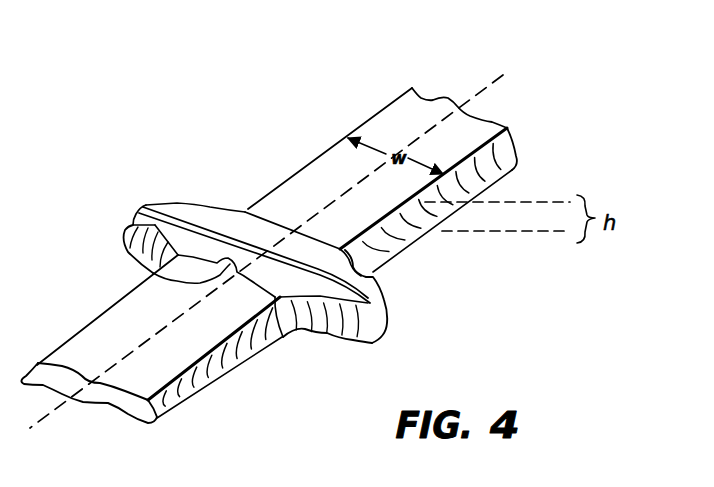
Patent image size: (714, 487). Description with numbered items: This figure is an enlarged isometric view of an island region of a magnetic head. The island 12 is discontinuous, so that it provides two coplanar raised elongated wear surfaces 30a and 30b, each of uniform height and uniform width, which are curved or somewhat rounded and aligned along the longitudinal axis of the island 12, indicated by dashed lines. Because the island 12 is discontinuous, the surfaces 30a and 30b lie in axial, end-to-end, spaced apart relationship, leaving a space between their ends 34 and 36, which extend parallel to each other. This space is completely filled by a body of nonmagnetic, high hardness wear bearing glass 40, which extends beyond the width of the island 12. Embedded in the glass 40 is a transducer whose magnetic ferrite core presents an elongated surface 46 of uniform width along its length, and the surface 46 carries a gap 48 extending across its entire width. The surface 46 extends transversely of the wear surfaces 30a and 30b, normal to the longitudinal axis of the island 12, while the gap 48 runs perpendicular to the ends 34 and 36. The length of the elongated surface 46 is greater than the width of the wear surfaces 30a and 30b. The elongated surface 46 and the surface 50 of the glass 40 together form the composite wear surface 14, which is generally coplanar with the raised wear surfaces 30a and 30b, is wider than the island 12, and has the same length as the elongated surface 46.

The island 12 is at (325, 112).
The composite wear surface 14 is at (124, 220).
The raised elongated wear surface 30a is at (420, 113).
The raised elongated wear surface 30b is at (170, 358).
The end 34 is at (272, 229).
The end 36 is at (153, 273).
The glass 40 is at (258, 235).
The elongated surface 46 is at (374, 277).
The gap 48 is at (286, 334).
The surface of the body of glass 50 is at (224, 222).